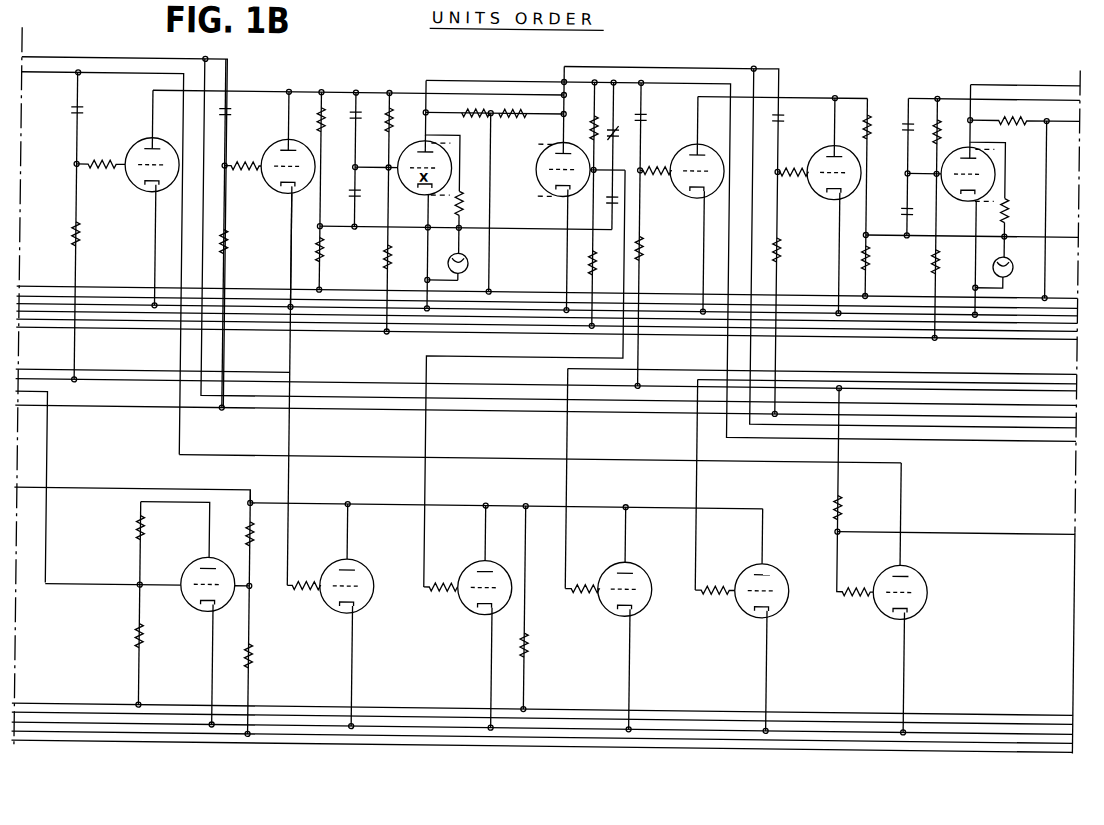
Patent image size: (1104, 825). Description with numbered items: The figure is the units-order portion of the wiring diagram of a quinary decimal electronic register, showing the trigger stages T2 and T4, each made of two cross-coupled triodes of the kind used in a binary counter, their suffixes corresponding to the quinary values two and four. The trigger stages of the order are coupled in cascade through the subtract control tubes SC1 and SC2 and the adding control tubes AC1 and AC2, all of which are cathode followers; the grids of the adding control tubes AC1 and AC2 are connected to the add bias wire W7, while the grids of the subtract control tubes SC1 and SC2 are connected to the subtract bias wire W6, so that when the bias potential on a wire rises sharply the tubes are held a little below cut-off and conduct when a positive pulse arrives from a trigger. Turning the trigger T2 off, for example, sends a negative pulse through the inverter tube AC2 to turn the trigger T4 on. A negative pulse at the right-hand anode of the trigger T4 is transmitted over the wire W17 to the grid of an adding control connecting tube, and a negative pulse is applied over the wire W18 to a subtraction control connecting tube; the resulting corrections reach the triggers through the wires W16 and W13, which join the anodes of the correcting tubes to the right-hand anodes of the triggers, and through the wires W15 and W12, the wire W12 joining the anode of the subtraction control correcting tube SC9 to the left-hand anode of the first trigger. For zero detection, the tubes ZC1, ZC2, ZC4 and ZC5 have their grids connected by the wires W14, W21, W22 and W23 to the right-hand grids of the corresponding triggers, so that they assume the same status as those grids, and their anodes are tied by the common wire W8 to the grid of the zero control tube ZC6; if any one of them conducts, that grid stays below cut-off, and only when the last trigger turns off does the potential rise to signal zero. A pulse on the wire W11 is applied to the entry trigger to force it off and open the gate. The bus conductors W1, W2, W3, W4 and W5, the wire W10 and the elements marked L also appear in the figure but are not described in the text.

The wire 1 (bus conductor) W1 is at (54, 284).
The wire 2 (bus conductor) W2 is at (112, 295).
The wire 3 (bus conductor) W3 is at (152, 303).
The wire 4 (bus conductor) W4 is at (266, 319).
The wire 5 (bus conductor) W5 is at (366, 326).
The subtract bias wire W6 is at (362, 377).
The add bias wire W7 is at (80, 404).
The common wire W8 is at (112, 486).
The wire 10 W10 is at (964, 522).
The wire W11 is at (117, 582).
The wire W12 is at (110, 71).
The wire W13 is at (162, 56).
The wire W14 is at (64, 369).
The wire W15 is at (523, 75).
The wire W16 is at (673, 60).
The wire W17 is at (949, 87).
The wire W18 is at (1036, 73).
The wire W21 is at (428, 536).
The wire W22 is at (571, 534).
The wire W23 is at (701, 534).
The subtract control tube SC1 is at (134, 187).
The adding control tube AC1 is at (271, 185).
The trigger stage T2 is at (564, 196).
The subtract control tube SC2 is at (683, 187).
The adding control tube AC2 is at (820, 185).
The trigger stage T4 is at (990, 212).
The indicator lamp L is at (468, 252).
The zero control tube ZC6 is at (187, 613).
The zero detecting tube ZC1 is at (321, 614).
The zero detecting tube ZC2 is at (470, 611).
The zero detecting tube ZC4 is at (612, 611).
The zero detecting tube ZC5 is at (746, 611).
The subtraction control correcting tube SC9 is at (872, 614).